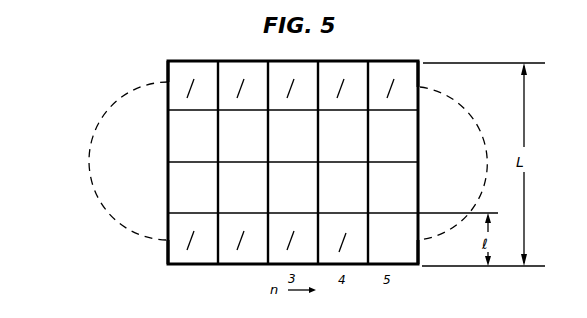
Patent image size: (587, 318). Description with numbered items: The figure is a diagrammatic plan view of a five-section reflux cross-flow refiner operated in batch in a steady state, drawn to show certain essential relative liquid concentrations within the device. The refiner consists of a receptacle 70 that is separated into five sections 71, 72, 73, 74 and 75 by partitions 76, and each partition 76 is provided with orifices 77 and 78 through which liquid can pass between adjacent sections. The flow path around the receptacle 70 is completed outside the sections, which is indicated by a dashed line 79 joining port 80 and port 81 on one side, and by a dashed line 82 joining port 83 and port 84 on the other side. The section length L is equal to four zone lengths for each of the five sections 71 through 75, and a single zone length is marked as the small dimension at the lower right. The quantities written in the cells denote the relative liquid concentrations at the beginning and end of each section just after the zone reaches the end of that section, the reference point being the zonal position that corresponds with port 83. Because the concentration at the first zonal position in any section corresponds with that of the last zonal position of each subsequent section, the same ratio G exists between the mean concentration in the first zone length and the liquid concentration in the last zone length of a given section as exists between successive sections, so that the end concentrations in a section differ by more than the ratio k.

The receptacle 70 is at (293, 160).
The first section 71 is at (192, 254).
The second section 72 is at (248, 258).
The third section 73 is at (306, 256).
The fourth section 74 is at (353, 257).
The fifth section 75 is at (402, 257).
The partition 76 is at (193, 133).
The orifice 77 is at (262, 241).
The orifice 78 is at (318, 83).
The dashed line 79 is at (88, 158).
The port 80 is at (168, 82).
The port 81 is at (162, 244).
The dashed line 82 is at (492, 143).
The port 83 is at (419, 241).
The port 84 is at (422, 84).